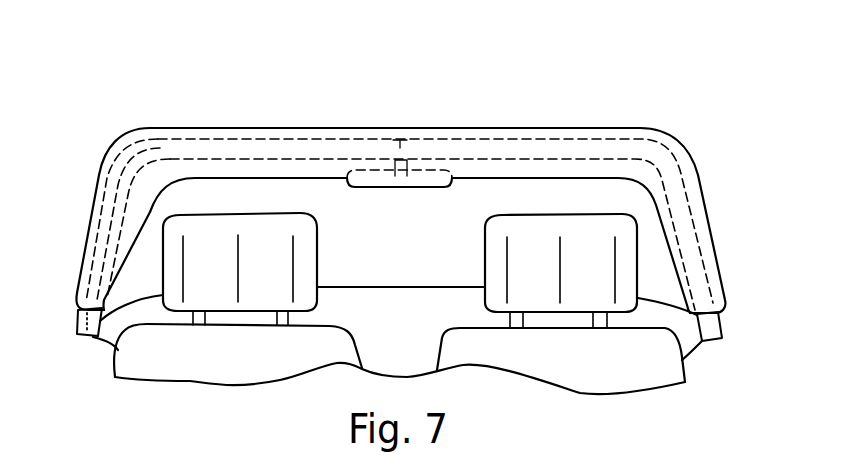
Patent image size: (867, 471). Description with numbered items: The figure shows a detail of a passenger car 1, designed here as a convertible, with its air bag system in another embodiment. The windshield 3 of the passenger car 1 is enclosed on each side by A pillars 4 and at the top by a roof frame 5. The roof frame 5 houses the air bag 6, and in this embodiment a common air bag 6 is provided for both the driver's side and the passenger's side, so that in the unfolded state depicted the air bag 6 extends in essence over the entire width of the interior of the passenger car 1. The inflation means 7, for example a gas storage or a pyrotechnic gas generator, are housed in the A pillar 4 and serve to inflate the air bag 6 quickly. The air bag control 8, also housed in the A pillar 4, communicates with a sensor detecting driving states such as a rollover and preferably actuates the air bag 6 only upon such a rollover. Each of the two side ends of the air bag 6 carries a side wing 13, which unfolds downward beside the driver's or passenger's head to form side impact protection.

The passenger car 1 is at (140, 98).
The windshield 3 is at (480, 197).
The A pillar 4 is at (82, 240).
The roof frame 5 is at (401, 138).
The air bag 6 is at (550, 128).
The inflation means 7 is at (100, 203).
The air bag control 8 is at (80, 277).
The side wing 13 is at (98, 183).